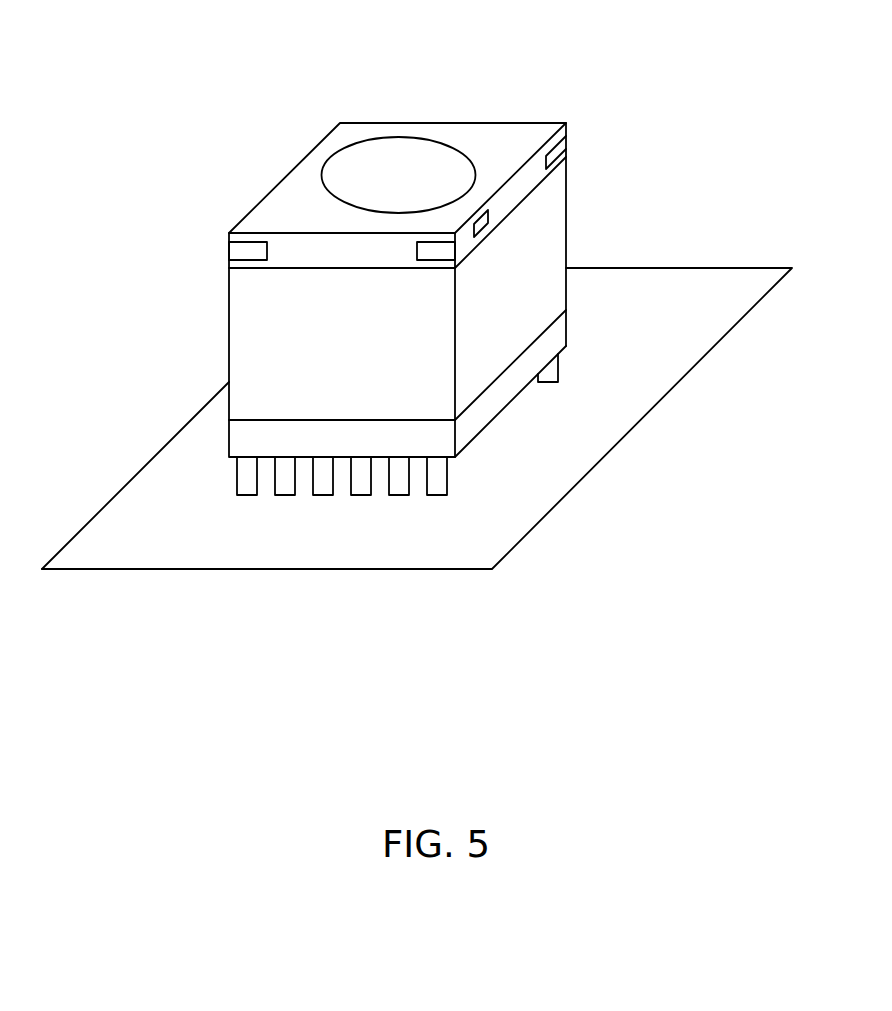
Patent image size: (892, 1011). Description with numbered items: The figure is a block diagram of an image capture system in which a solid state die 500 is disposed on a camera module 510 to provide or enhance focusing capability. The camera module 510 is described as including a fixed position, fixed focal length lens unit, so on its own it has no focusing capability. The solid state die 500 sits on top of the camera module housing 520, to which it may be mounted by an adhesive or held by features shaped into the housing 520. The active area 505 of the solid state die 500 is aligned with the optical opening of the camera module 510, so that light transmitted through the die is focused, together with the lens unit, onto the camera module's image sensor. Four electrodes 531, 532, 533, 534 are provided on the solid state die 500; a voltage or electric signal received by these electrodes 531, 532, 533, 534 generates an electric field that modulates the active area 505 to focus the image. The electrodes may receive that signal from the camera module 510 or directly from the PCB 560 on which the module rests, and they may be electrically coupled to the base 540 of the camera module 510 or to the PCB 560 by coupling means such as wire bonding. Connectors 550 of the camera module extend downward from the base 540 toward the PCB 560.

The solid state die 500 is at (273, 187).
The active area 505 is at (387, 157).
The camera module 510 is at (228, 318).
The camera module housing 520 is at (567, 222).
The electrode 531 is at (560, 145).
The electrode 532 is at (477, 222).
The electrode 533 is at (228, 250).
The electrode 534 is at (350, 118).
The base 540 is at (500, 388).
The connectors 550 is at (437, 487).
The PCB 560 is at (727, 287).